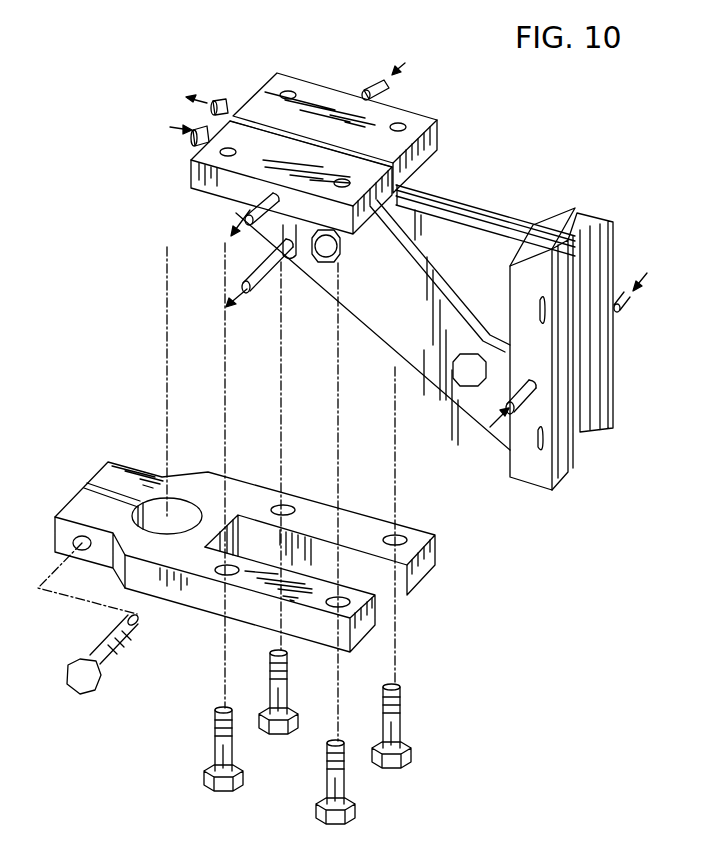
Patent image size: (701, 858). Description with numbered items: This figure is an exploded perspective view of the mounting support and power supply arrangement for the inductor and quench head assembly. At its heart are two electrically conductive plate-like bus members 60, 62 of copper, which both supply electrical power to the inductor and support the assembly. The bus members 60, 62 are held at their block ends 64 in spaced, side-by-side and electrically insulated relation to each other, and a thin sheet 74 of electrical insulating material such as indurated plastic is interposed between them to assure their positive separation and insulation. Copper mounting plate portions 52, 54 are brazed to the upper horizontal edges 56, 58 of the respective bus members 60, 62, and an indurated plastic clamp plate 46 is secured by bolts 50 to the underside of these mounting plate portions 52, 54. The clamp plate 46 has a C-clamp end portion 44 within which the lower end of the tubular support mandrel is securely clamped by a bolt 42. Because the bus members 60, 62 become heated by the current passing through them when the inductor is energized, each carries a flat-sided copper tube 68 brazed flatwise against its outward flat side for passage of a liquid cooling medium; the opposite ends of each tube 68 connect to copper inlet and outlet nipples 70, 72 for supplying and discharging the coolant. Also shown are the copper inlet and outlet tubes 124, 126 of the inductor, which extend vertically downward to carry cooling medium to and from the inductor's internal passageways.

The bolt 42 is at (98, 652).
The C-clamp end portion 44 is at (108, 483).
The clamp plate 46 is at (215, 607).
The bolts 50 is at (327, 778).
The mounting plate portion 52 is at (313, 93).
The mounting plate portion 54 is at (243, 166).
The upper horizontal edge 56 is at (460, 202).
The upper horizontal edge 58 is at (443, 220).
The bus member 60 is at (507, 207).
The bus member 62 is at (388, 320).
The block ends 64 is at (583, 215).
The flat-sided copper tube 68 is at (403, 247).
The inlet nipple 70 is at (620, 305).
The outlet nipple 72 is at (270, 293).
The thin sheet of electrical insulating material 74 is at (423, 190).
The inlet tube 124 is at (221, 100).
The outlet tube 126 is at (203, 143).